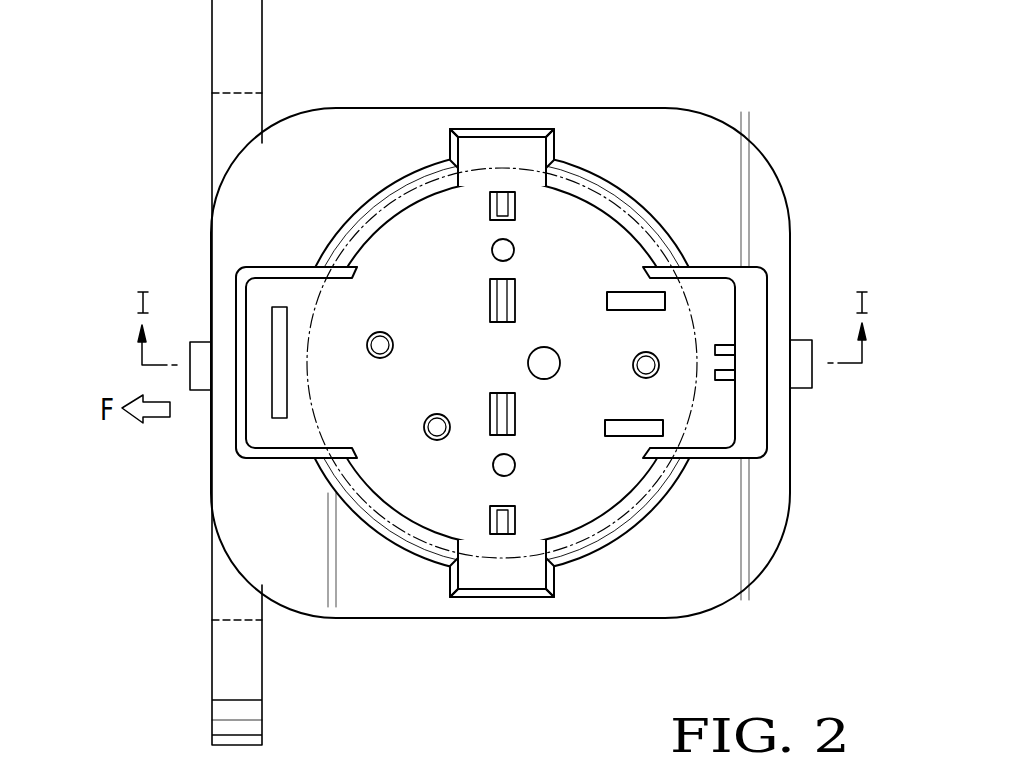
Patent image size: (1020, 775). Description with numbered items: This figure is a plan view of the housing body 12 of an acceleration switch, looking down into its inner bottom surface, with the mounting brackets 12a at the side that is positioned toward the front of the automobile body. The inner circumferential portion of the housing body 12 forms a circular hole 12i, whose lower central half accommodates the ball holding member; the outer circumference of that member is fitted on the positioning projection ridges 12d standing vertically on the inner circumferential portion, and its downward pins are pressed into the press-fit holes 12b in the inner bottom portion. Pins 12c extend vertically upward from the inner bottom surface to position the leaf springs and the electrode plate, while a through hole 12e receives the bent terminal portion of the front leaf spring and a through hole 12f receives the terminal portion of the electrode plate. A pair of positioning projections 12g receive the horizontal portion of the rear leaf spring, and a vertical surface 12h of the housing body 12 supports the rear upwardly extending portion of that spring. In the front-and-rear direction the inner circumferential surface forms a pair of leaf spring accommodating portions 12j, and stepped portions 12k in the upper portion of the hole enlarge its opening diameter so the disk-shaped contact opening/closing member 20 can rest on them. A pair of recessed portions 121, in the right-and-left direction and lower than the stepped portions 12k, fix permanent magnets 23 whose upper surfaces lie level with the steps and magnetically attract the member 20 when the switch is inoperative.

The housing body 12 is at (738, 133).
The mounting brackets 12a is at (262, 7).
The press-fit holes 12b is at (492, 249).
The pins 12c is at (427, 420).
The positioning projection ridges 12d is at (508, 220).
The through hole 12e is at (490, 302).
The through hole 12f is at (490, 412).
The positioning projections 12g is at (635, 293).
The vertical surface 12h is at (714, 372).
The circular hole 12i is at (410, 508).
The leaf spring accommodating portions 12j is at (238, 442).
The stepped portions 12k is at (412, 200).
The recessed portions 121 is at (458, 153).
The permanent magnets 23 is at (528, 148).
The contact opening/closing member 20 is at (310, 272).